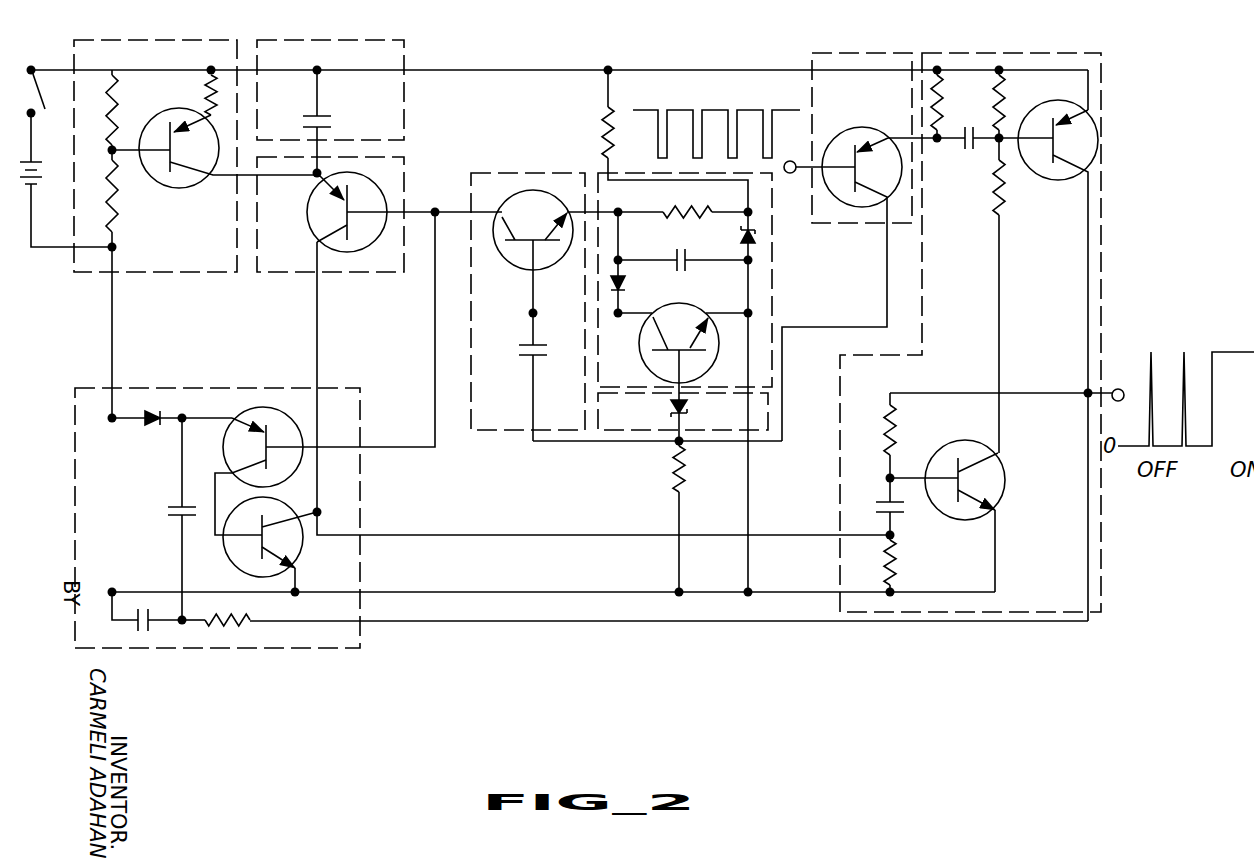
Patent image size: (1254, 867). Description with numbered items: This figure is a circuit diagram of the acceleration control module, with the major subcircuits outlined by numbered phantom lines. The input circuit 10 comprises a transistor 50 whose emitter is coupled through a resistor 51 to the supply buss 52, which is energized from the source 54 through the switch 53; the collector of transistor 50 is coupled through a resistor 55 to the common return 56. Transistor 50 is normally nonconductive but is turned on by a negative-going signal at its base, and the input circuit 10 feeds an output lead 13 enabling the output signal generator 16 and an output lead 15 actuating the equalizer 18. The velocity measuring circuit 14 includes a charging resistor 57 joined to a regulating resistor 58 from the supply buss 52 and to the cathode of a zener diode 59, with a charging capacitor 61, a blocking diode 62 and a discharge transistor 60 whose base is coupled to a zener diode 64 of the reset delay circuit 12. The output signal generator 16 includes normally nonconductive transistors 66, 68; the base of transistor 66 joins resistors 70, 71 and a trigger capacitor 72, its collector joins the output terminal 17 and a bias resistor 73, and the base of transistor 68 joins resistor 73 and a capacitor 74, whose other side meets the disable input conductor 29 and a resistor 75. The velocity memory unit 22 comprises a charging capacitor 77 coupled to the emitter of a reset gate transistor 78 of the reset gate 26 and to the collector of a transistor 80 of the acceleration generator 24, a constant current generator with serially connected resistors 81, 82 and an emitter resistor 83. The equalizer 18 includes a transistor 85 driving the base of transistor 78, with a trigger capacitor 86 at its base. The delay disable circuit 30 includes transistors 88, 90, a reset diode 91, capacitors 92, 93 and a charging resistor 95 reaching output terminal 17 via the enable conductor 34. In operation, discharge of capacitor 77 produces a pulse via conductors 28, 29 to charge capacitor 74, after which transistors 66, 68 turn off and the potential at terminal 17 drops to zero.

The input circuit 10 is at (808, 60).
The reset delay circuit 12 is at (770, 414).
The output lead 13 is at (912, 140).
The velocity measuring circuit 14 is at (798, 274).
The output lead 15 is at (576, 444).
The output signal generator 16 is at (1106, 76).
The output terminal 17 is at (1112, 384).
The equalizer 18 is at (503, 170).
The velocity memory unit 22 is at (408, 56).
The acceleration generator 24 is at (114, 42).
The reset gate 26 is at (406, 166).
The conductor 28 is at (320, 332).
The disable input conductor 29 is at (832, 540).
The delay disable circuit 30 is at (362, 648).
The enable conductor 34 is at (517, 626).
The transistor 50 is at (842, 132).
The resistor 51 is at (944, 94).
The supply buss 52 is at (528, 72).
The switch 53 is at (52, 72).
The source 54 is at (42, 187).
The resistor 55 is at (672, 486).
The common return 56 is at (533, 585).
The charging resistor 57 is at (668, 213).
The regulating resistor 58 is at (598, 122).
The zener diode 59 is at (760, 232).
The discharge transistor 60 is at (646, 360).
The charging capacitor 61 is at (692, 256).
The blocking diode 62 is at (630, 289).
The zener diode 64 is at (661, 406).
The transistor 66 is at (1058, 182).
The transistor 68 is at (1008, 474).
The resistor 70 is at (1005, 96).
The resistor 71 is at (1003, 214).
The trigger capacitor 72 is at (975, 150).
The bias resistor 73 is at (898, 424).
The capacitor 74 is at (870, 509).
The resistor 75 is at (898, 572).
The charging capacitor 77 is at (333, 108).
The reset gate transistor 78 is at (306, 232).
The transistor 80 is at (190, 190).
The resistor 81 is at (118, 98).
The resistor 82 is at (118, 210).
The resistor 83 is at (206, 112).
The transistor 85 is at (516, 268).
The trigger capacitor 86 is at (524, 360).
The transistor 88 is at (255, 402).
The transistor 90 is at (302, 557).
The reset diode 91 is at (150, 432).
The capacitor 92 is at (170, 521).
The capacitor 93 is at (134, 626).
The charging resistor 95 is at (234, 626).